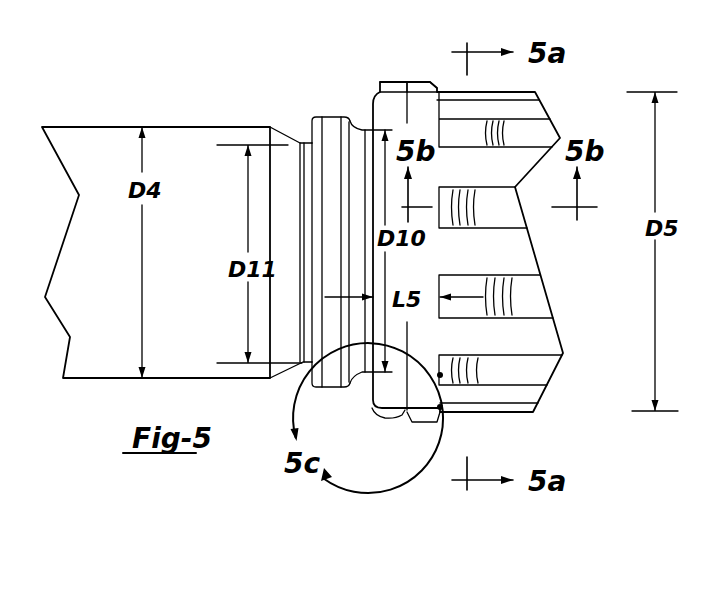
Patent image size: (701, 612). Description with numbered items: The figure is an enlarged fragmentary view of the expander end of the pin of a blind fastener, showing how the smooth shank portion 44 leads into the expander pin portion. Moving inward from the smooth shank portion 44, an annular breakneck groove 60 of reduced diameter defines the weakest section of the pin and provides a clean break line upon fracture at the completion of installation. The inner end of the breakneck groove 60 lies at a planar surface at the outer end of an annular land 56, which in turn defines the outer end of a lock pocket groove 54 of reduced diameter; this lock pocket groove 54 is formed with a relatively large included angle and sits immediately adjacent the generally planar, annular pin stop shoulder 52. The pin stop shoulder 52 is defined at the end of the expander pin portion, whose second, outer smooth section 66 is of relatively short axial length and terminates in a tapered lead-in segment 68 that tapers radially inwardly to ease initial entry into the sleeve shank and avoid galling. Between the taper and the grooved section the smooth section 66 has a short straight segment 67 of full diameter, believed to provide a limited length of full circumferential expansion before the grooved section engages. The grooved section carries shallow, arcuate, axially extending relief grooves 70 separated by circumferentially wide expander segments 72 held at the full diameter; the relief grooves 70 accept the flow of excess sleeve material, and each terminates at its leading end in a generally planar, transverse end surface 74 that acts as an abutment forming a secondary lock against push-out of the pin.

The smooth shank portion 44 is at (35, 217).
The pin stop shoulder 52 is at (373, 101).
The lock pocket groove 54 is at (365, 123).
The annular land 56 is at (326, 131).
The breakneck groove 60 is at (302, 128).
The second, outer smooth section 66 is at (405, 82).
The straight segment 67 is at (422, 415).
The tapered lead-in segment 68 is at (383, 413).
The relief grooves 70 is at (533, 367).
The expander segments 72 is at (510, 253).
The planar end surface 74 is at (438, 146).